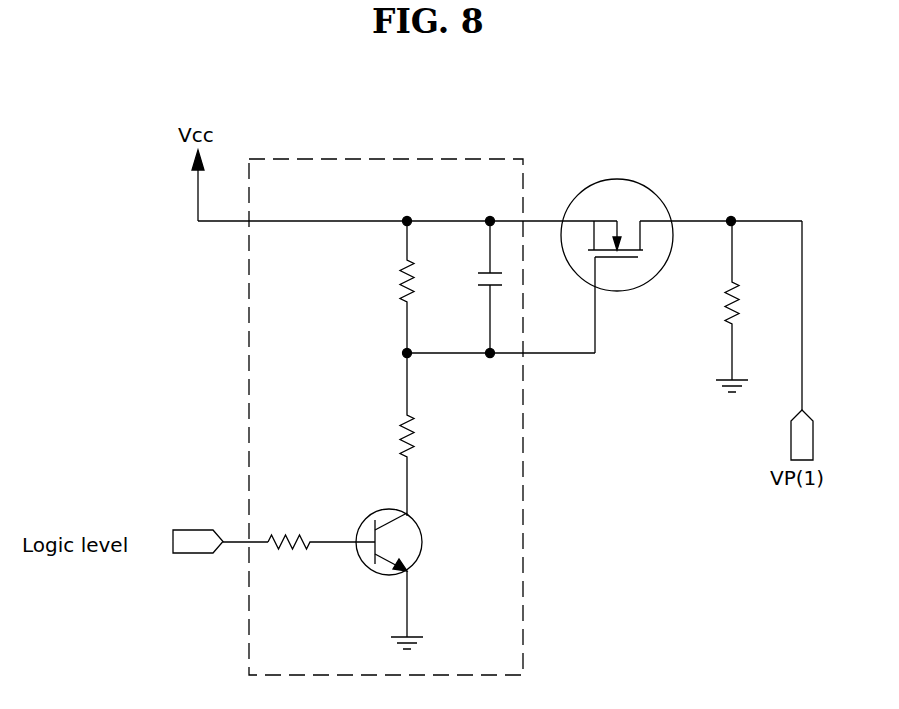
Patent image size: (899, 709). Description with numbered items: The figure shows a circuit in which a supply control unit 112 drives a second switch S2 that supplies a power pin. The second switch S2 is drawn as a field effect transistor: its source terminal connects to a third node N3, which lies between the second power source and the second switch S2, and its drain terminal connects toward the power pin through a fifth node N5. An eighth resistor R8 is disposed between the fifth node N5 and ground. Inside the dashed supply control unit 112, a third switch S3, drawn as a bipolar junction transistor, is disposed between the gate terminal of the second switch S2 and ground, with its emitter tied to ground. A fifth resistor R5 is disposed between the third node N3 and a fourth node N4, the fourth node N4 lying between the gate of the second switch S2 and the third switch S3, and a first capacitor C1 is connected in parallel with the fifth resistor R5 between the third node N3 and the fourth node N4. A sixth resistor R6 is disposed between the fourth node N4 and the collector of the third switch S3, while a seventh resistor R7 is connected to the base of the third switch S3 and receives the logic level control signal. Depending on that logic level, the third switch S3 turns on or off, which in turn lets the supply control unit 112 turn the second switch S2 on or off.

The supply control unit 112 is at (523, 570).
The second switch S2 is at (617, 178).
The third switch S3 is at (421, 541).
The fifth resistor R5 is at (388, 287).
The sixth resistor R6 is at (389, 434).
The seventh resistor R7 is at (321, 526).
The eighth resistor R8 is at (718, 306).
The first capacitor C1 is at (476, 287).
The third node N3 is at (407, 208).
The fourth node N4 is at (482, 355).
The fifth node N5 is at (731, 208).